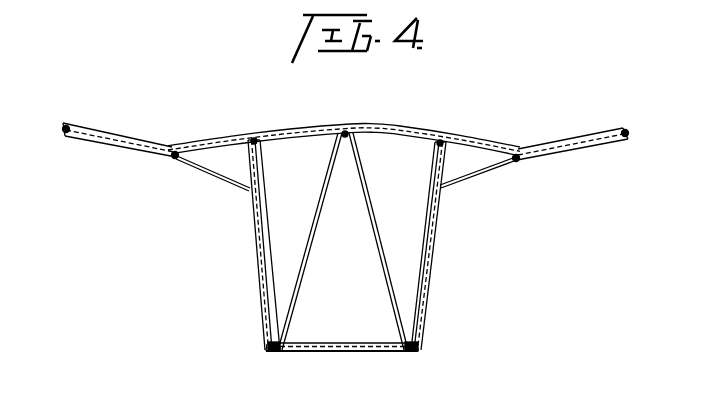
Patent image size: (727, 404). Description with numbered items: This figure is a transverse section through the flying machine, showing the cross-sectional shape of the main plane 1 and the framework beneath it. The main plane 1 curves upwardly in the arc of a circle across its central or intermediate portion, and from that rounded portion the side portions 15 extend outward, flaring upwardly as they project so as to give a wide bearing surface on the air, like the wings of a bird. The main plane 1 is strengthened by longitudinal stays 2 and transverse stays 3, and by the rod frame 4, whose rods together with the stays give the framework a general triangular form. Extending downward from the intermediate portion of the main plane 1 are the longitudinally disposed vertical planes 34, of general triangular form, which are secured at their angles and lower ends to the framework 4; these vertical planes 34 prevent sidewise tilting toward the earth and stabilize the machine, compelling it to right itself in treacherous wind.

The main plane 1 is at (397, 131).
The longitudinal stays 2 is at (62, 130).
The transverse stays 3 is at (323, 133).
The frame 4 is at (333, 362).
The side portions 15 is at (113, 147).
The vertical planes 34 is at (236, 258).